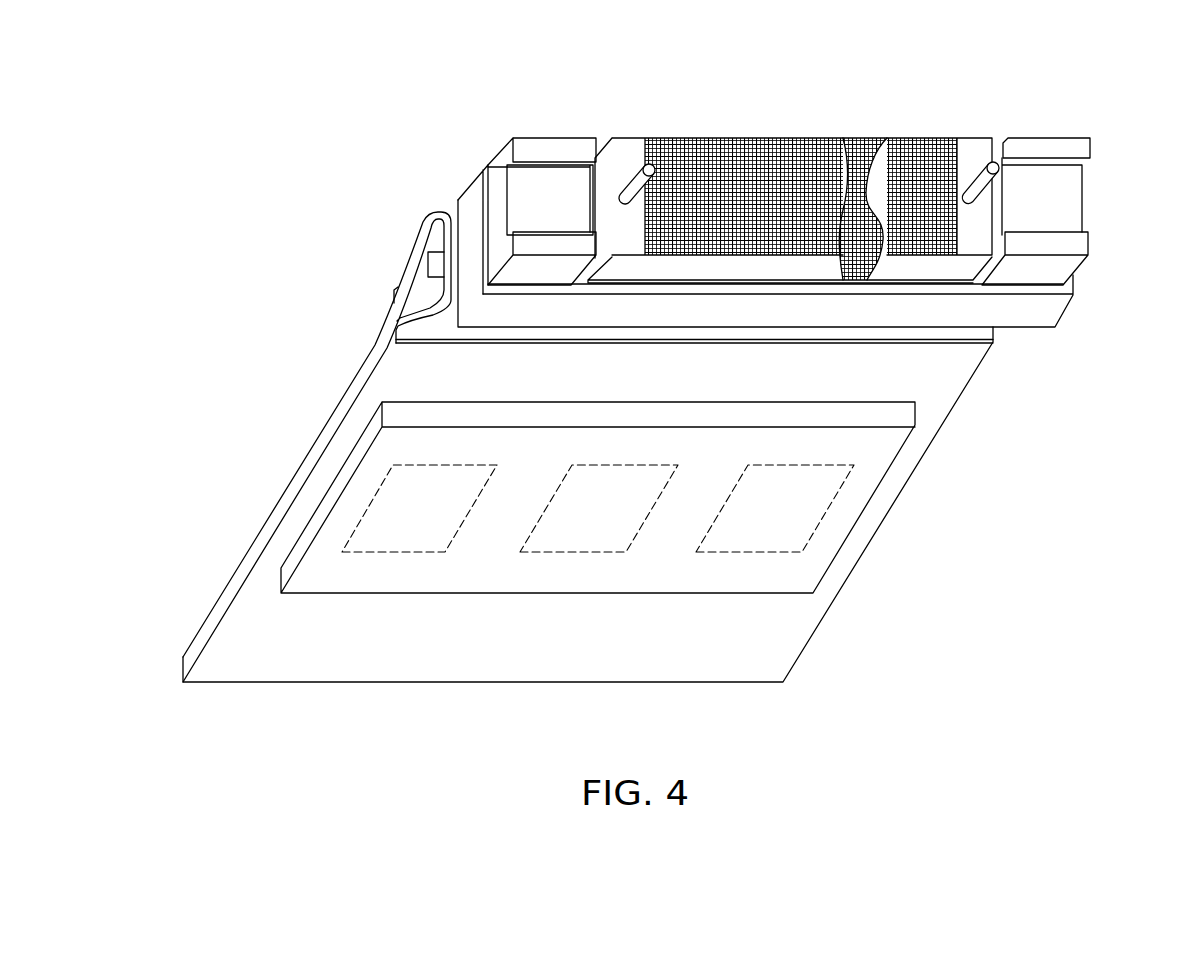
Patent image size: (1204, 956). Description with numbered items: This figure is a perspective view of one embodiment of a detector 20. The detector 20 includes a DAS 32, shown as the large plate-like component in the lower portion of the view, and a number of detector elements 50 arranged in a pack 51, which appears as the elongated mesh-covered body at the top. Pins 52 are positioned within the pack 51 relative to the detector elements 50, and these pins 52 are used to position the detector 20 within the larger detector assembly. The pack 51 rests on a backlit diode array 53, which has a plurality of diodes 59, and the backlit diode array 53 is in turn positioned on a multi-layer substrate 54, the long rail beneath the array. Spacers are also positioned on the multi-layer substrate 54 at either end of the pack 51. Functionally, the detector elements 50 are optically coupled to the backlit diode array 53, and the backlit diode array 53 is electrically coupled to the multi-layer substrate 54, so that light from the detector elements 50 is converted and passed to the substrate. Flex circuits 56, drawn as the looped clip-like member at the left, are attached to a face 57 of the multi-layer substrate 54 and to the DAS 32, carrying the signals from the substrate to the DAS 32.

The detector 20 is at (800, 200).
The DAS 32 is at (870, 520).
The detector elements 50 is at (725, 152).
The pack 51 is at (835, 200).
The pins 52 is at (975, 178).
The backlit diode array 53 is at (950, 288).
The multi-layer substrate 54 is at (1052, 310).
The flex circuits 56 is at (420, 313).
The face 57 is at (457, 203).
The diodes 59 is at (852, 278).